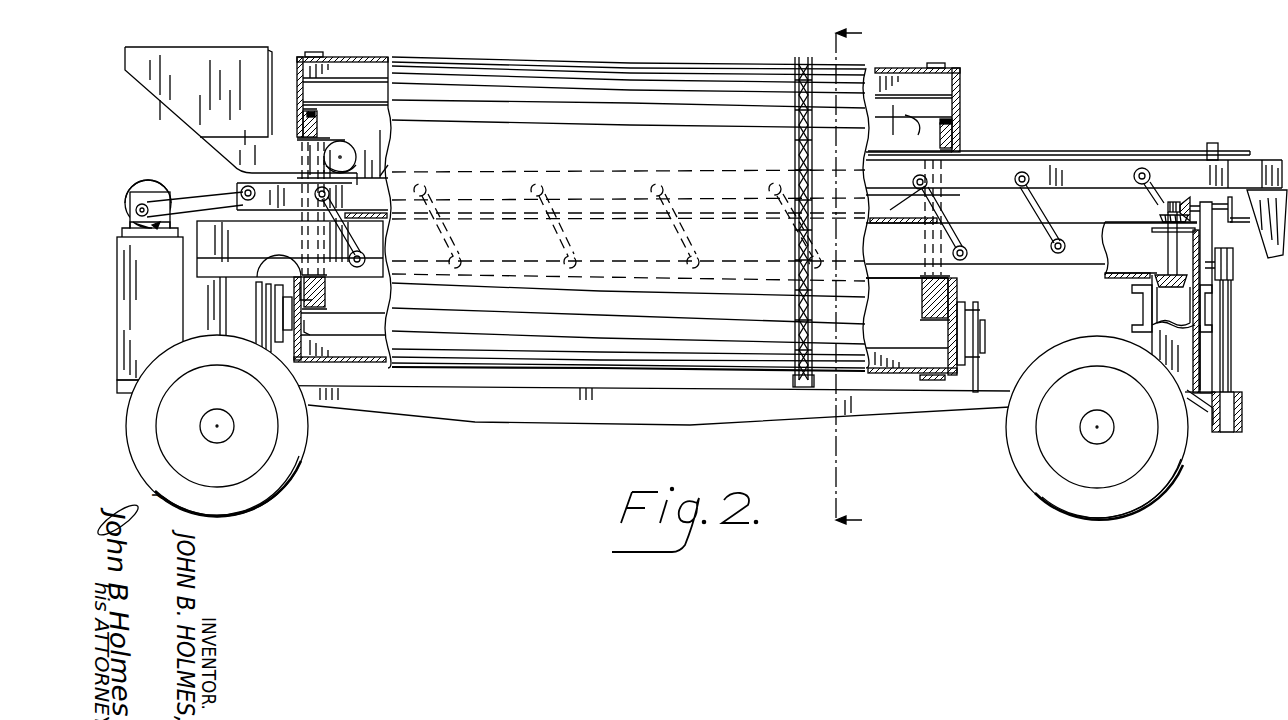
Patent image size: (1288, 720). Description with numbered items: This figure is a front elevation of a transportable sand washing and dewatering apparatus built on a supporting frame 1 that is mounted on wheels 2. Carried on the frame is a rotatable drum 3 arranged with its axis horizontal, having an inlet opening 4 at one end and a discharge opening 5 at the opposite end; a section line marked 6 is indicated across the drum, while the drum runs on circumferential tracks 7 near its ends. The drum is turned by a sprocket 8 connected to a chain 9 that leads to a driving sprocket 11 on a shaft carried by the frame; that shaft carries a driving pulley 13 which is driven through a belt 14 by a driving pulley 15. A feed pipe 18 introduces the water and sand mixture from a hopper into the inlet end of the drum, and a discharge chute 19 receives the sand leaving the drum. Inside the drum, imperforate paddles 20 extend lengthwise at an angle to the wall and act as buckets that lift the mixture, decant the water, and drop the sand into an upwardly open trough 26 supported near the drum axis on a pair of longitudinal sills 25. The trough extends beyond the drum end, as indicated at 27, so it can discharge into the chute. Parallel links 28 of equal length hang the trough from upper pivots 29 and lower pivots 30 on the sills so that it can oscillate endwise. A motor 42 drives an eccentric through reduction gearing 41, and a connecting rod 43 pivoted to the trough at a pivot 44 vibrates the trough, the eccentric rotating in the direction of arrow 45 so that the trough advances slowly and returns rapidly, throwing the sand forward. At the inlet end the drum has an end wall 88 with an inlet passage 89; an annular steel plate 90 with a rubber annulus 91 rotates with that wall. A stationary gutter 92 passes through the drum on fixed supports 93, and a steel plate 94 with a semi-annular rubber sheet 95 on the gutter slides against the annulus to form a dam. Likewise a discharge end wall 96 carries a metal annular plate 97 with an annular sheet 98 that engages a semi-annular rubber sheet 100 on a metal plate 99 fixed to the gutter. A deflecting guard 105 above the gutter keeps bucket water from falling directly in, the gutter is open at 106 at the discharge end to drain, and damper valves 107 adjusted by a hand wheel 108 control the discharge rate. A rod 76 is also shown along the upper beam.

The supporting frame 1 is at (522, 423).
The wheels 2 is at (292, 478).
The rotatable drum 3 is at (475, 60).
The inlet opening 4 is at (305, 138).
The discharge opening 5 is at (955, 268).
The rollers 6 is at (859, 278).
The circumferential tracks 7 is at (315, 52).
The sprocket 8 is at (800, 58).
The chain 9 is at (798, 388).
The driving sprocket 11 is at (170, 92).
The driving pulley 13 is at (1235, 410).
The belt 14 is at (1228, 340).
The driving pulley 15 is at (1235, 265).
The feed pipe 18 is at (322, 152).
The discharge chute 19 is at (1278, 257).
The imperforate paddles 20 is at (890, 105).
The longitudinal sills 25 is at (378, 283).
The trough 26 is at (381, 166).
The trough extension 27 is at (1264, 150).
The links 28 is at (348, 228).
The pivots 29 is at (1025, 175).
The pivots 30 is at (1088, 262).
The reduction gearing 41 is at (135, 210).
The motor 42 is at (140, 185).
The connecting rod 43 is at (188, 195).
The pivot 44 is at (245, 200).
The arrow 45 is at (132, 232).
The control rod 76 is at (1108, 151).
The end wall 88 is at (297, 68).
The inlet passage 89 is at (270, 275).
The annular steel plate 90 is at (303, 122).
The rubber annulus 91 is at (305, 325).
The stationary gutter 92 is at (200, 250).
The supports 93 is at (220, 300).
The steel plate 94 is at (327, 295).
The semi-annular rubber sheet 95 is at (312, 305).
The discharge end wall 96 is at (960, 112).
The metal annular plate 97 is at (952, 138).
The annular sheet 98 is at (910, 115).
The metal plate 99 is at (925, 318).
The semi-annular rubber sheet 100 is at (935, 318).
The deflecting guard 105 is at (372, 215).
The gutter opening 106 is at (1173, 290).
The damper valves 107 is at (1168, 274).
The hand wheel 108 is at (1220, 215).